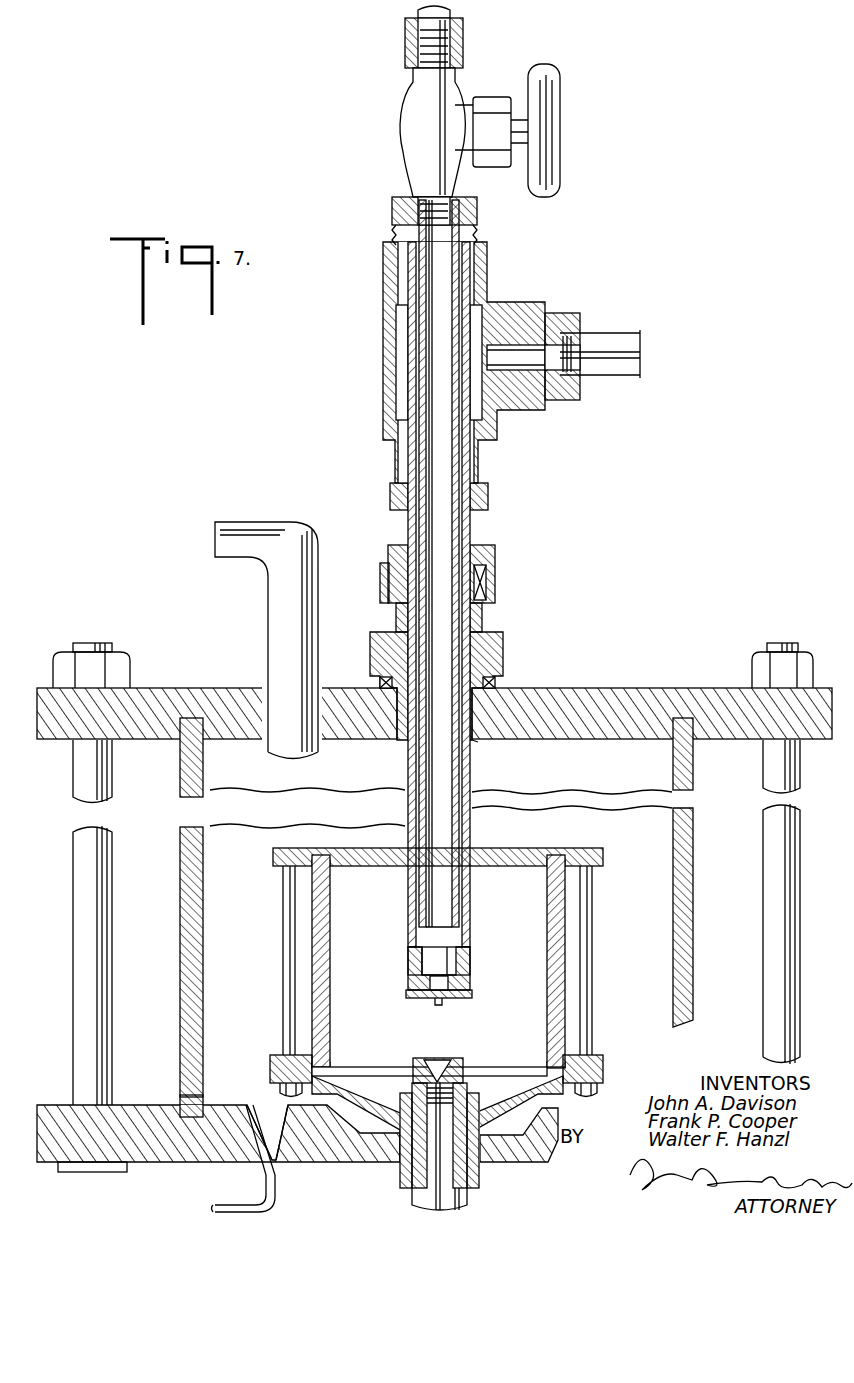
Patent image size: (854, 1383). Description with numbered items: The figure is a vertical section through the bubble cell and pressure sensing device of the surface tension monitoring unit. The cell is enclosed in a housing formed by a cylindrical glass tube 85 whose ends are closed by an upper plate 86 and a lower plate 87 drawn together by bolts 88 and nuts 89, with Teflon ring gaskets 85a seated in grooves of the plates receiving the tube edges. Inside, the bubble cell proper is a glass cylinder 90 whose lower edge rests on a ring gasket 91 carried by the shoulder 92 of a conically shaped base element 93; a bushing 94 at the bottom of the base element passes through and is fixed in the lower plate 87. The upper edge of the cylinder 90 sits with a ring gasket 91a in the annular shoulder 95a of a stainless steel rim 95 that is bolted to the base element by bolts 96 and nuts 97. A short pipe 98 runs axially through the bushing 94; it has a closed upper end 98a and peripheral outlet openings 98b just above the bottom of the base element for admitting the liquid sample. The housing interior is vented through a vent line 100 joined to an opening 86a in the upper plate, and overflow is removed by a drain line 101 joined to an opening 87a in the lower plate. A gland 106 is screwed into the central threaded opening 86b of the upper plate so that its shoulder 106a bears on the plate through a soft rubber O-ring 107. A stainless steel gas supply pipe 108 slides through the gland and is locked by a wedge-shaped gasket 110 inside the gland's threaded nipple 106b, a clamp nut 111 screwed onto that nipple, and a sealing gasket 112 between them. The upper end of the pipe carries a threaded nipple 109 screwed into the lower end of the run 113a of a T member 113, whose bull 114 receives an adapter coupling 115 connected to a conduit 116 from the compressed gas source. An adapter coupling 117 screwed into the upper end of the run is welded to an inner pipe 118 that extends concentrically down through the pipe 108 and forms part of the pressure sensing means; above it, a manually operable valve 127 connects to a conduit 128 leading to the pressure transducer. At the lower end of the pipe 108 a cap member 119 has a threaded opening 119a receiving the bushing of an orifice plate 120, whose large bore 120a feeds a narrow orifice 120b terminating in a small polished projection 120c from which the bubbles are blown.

The conduit 128 is at (452, 12).
The manually operable valve 127 is at (413, 124).
The adapter coupling 117 is at (392, 209).
The bull of the T member 114 is at (526, 302).
The threaded adapter coupling 115 is at (570, 313).
The conduit 116 is at (606, 373).
The pipe or tube 118 is at (419, 343).
The run of the T member 113a is at (394, 360).
The T member 113 is at (497, 410).
The externally threaded nipple or union 109 is at (489, 495).
The stainless steel pipe 108 is at (408, 527).
The sealing gasket 112 is at (388, 565).
The clamp nut 111 is at (495, 550).
The wedge-shaped gasket 110 is at (385, 590).
The externally threaded nipple 106b is at (492, 585).
The gland 106 is at (504, 652).
The shoulder of the gland 106a is at (496, 683).
The soft rubber O-ring 107 is at (380, 682).
The vent line 100 is at (272, 623).
The nuts 89 is at (125, 676).
The Teflon ring gaskets 85a is at (200, 717).
The upper stainless steel plate 86 is at (619, 690).
The opening 86a is at (284, 755).
The central threaded opening 86b is at (478, 742).
The cylindrical glass tube 85 is at (203, 800).
The bolts 88 is at (768, 812).
The stainless steel rim 95 is at (300, 848).
The annular shoulder 95a is at (331, 848).
The Teflon ring gasket 91a is at (338, 853).
The bolts 96 is at (290, 940).
The threaded opening 119a is at (408, 968).
The bore 120a is at (452, 965).
The cap member 119 is at (471, 981).
The small projection 120c is at (434, 1002).
The orifice plate 120 is at (462, 1000).
The orifice 120b is at (438, 1004).
The cylindrical glass tube 90 is at (331, 1030).
The closed upper end 98a is at (449, 1064).
The Teflon ring gasket 91 is at (541, 1070).
The nuts 97 is at (597, 1092).
The peripheral outlet openings 98b is at (420, 1098).
The peripheral flange or shoulder 92 is at (493, 1114).
The conically shaped base element 93 is at (482, 1112).
The bushing 94 is at (400, 1182).
The short pipe 98 is at (468, 1178).
The lower stainless steel plate 87 is at (536, 1158).
The opening 87a is at (285, 1158).
The drain line 101 is at (225, 1205).